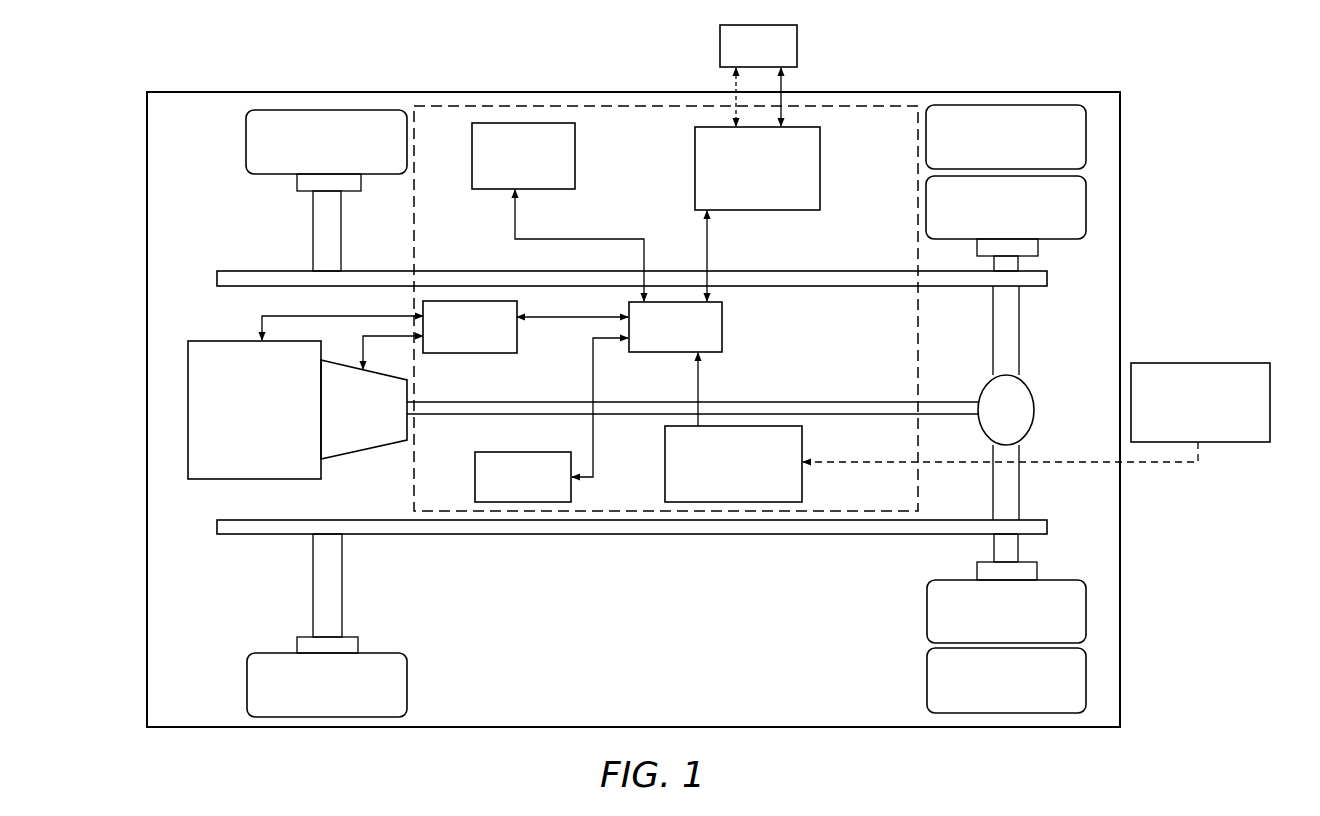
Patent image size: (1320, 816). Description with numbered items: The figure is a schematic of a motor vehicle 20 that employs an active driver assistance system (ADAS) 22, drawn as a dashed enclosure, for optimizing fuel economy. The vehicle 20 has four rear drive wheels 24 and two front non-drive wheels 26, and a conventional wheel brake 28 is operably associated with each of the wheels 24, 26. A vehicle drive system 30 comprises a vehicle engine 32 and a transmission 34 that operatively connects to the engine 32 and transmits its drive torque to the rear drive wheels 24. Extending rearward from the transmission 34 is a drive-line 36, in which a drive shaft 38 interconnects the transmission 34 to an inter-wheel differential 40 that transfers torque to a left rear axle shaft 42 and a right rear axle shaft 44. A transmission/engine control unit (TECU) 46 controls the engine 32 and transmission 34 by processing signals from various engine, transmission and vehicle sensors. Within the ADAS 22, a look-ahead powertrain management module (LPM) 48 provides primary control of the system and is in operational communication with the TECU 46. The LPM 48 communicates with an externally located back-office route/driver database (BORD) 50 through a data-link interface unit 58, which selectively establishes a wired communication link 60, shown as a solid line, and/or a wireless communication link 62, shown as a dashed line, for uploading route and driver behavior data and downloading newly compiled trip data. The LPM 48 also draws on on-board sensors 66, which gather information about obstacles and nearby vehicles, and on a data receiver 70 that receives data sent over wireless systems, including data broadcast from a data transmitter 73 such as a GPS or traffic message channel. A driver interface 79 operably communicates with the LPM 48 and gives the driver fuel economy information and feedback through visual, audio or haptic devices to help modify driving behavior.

The motor vehicle 20 is at (176, 92).
The active driver assistance system (ADAS) 22 is at (548, 106).
The rear drive wheels 24 is at (1086, 137).
The front non-drive wheels 26 is at (292, 110).
The wheel brake 28 is at (297, 178).
The vehicle drive system 30 is at (201, 329).
The vehicle engine 32 is at (214, 376).
The transmission 34 is at (361, 450).
The drive-line 36 is at (806, 393).
The drive shaft 38 is at (517, 401).
The inter-wheel differential 40 is at (1024, 410).
The left rear axle shaft 42 is at (1013, 478).
The right rear axle shaft 44 is at (1010, 325).
The transmission/engine control unit (TECU) 46 is at (463, 301).
The look-ahead powertrain management module (LPM) 48 is at (722, 330).
The back-office route/driver database (BORD) 50 is at (797, 40).
The data-link interface unit 58 is at (820, 168).
The wired communication link 60 is at (784, 85).
The wireless communication link 62 is at (733, 85).
The on-board sensors 66 is at (540, 502).
The data receiver 70 is at (802, 480).
The data transmitter 73 is at (1270, 420).
The driver interface 79 is at (575, 155).